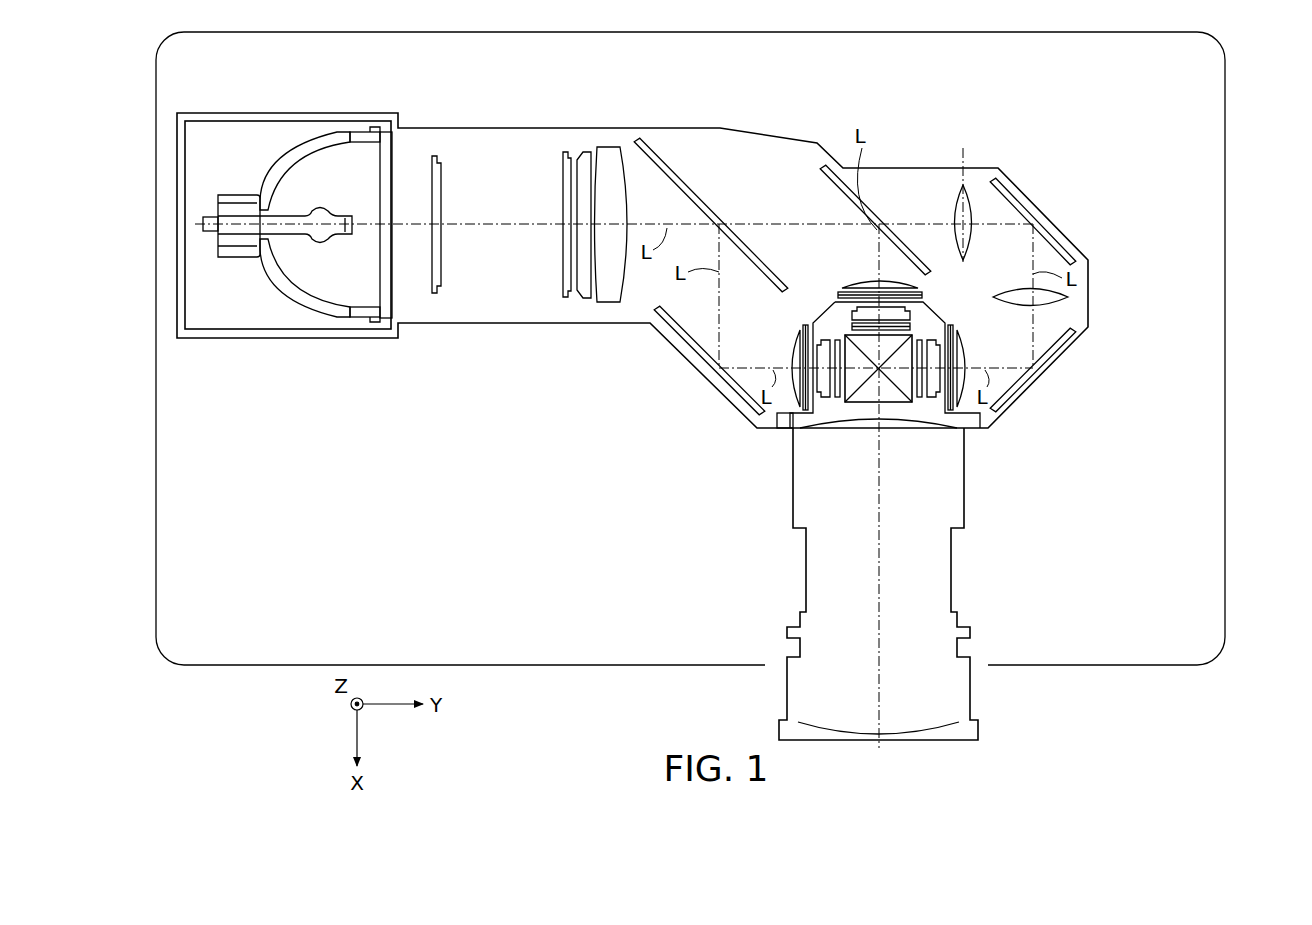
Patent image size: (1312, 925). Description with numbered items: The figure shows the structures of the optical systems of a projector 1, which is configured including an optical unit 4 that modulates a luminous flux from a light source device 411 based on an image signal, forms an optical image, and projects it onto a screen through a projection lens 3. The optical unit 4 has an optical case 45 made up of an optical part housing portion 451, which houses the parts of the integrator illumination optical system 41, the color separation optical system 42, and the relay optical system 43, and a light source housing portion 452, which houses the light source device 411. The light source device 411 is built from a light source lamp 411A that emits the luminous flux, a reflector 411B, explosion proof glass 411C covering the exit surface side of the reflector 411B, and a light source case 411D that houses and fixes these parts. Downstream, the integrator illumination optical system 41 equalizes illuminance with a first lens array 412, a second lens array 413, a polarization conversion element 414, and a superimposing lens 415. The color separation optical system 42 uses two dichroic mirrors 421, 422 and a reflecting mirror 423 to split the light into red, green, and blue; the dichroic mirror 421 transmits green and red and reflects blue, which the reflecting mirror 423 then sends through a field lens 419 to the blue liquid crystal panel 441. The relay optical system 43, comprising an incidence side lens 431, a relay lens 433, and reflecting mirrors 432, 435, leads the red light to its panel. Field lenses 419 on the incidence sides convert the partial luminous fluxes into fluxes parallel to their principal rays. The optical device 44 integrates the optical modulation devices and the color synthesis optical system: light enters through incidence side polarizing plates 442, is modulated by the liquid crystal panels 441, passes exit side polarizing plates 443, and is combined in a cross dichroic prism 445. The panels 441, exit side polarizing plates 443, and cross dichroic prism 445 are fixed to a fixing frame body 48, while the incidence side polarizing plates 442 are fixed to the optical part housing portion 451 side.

The projector 1 is at (1225, 358).
The projection lens 3 is at (953, 581).
The optical unit 4 is at (535, 483).
The integrator illumination optical system 41 is at (425, 178).
The color separation optical system 42 is at (782, 237).
The relay optical system 43 is at (1043, 265).
The optical device 44 is at (934, 343).
The optical case 45 is at (632, 285).
The fixing frame body 48 is at (777, 420).
The light source device 411 is at (299, 178).
The light source lamp 411A is at (317, 209).
The reflector 411B is at (334, 134).
The explosion proof glass 411C is at (402, 197).
The light source case 411D is at (207, 131).
The first lens array 412 is at (441, 193).
The second lens array 413 is at (563, 160).
The polarization conversion element 414 is at (586, 152).
The superimposing lens 415 is at (627, 199).
The field lens 419 is at (850, 280).
The dichroic mirror 421 is at (678, 181).
The dichroic mirror 422 is at (863, 206).
The reflecting mirror 423 is at (690, 340).
The incidence side lens 431 is at (962, 191).
The reflecting mirror 432 is at (1073, 254).
The relay lens 433 is at (1072, 297).
The reflecting mirror 435 is at (1043, 380).
The liquid crystal panel 441 is at (806, 397).
The incidence side polarizing plate 442 is at (934, 331).
The exit side polarizing plate 443 is at (1012, 344).
The cross dichroic prism 445 is at (884, 421).
The optical part housing portion 451 is at (495, 325).
The light source housing portion 452 is at (258, 338).